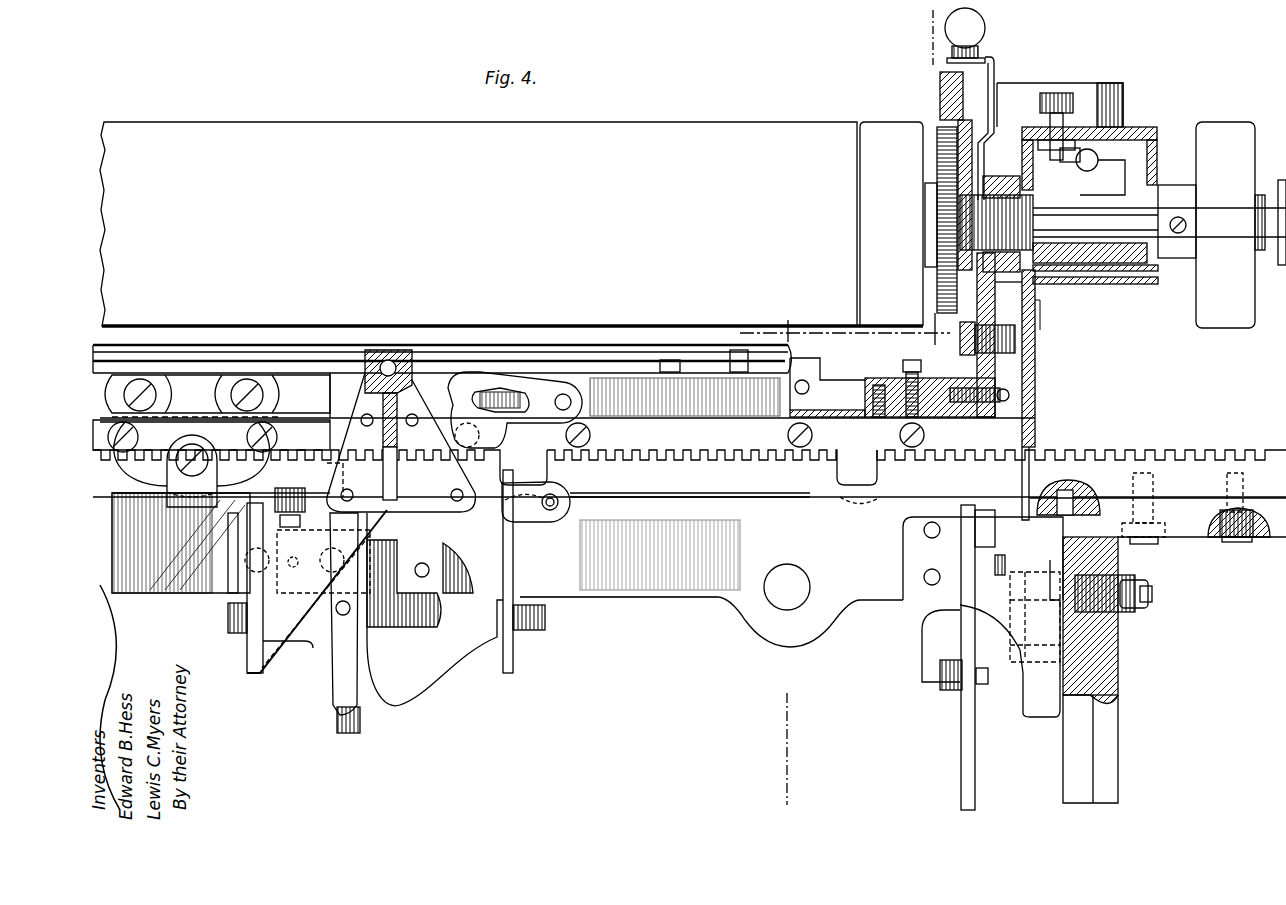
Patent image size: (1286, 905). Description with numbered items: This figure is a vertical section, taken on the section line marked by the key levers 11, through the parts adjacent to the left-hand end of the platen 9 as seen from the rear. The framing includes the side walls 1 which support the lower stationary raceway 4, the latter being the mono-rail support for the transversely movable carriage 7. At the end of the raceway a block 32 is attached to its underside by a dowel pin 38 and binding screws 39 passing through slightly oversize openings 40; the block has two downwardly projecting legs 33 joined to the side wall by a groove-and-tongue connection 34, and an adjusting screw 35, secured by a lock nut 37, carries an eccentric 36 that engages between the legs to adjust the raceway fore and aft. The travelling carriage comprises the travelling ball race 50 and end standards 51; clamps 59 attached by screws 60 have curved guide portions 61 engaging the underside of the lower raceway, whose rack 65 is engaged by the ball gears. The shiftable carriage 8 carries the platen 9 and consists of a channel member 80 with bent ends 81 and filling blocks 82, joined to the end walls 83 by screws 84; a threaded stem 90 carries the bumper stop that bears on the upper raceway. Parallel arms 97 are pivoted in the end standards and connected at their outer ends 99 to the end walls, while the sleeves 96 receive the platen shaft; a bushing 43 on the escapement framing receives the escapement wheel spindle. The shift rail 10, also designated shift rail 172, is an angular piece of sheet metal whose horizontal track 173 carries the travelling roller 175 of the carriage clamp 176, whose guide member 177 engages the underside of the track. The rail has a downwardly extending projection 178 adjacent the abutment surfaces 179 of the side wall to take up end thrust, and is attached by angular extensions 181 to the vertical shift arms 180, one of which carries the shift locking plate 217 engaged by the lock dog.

The platen 9 is at (677, 225).
The key levers 11 is at (934, 35).
The sleeves 96 is at (997, 185).
The parallel arms 97 is at (996, 325).
The end walls 83 is at (1000, 285).
The shiftable carriage 8 is at (1036, 378).
The end standards 51 is at (1036, 332).
The transversely movable carriage 7 is at (1036, 347).
The outer ends 99 is at (1017, 342).
The bent ends 81 is at (985, 375).
The screws 84 is at (1000, 406).
The channel member 80 is at (822, 382).
The filling blocks 82 is at (876, 385).
The threaded stem 90 is at (910, 370).
The travelling ball race 50 is at (665, 440).
The carriage clamp 176 is at (217, 396).
The travelling roller 175 is at (222, 460).
The guide member 177 is at (207, 505).
The clamps 59 is at (689, 473).
The screws 60 is at (566, 436).
The bushing 43 is at (392, 358).
The shift rail 10 is at (705, 598).
The horizontal track 173 is at (695, 497).
The shift rail 172 is at (640, 598).
The guide portions 61 is at (540, 506).
The angular extensions 181 is at (910, 568).
The vertical shift arms 180 is at (963, 752).
The shift locking plate 217 is at (925, 642).
The legs 33 is at (1020, 680).
The downwardly extending projection 178 is at (1036, 718).
The eccentric 36 is at (1035, 617).
The groove-and-tongue connection 34 is at (1112, 642).
The abutment surfaces 179 is at (1114, 690).
The side walls 1 is at (1118, 775).
The adjusting screw 35 is at (1152, 605).
The lock nut 37 is at (1150, 625).
The dowel pin 38 is at (1070, 490).
The block 32 is at (1160, 530).
The lower stationary raceway 4 is at (1177, 458).
The rack 65 is at (1233, 470).
The openings 40 is at (1152, 512).
The binding screws 39 is at (1223, 538).